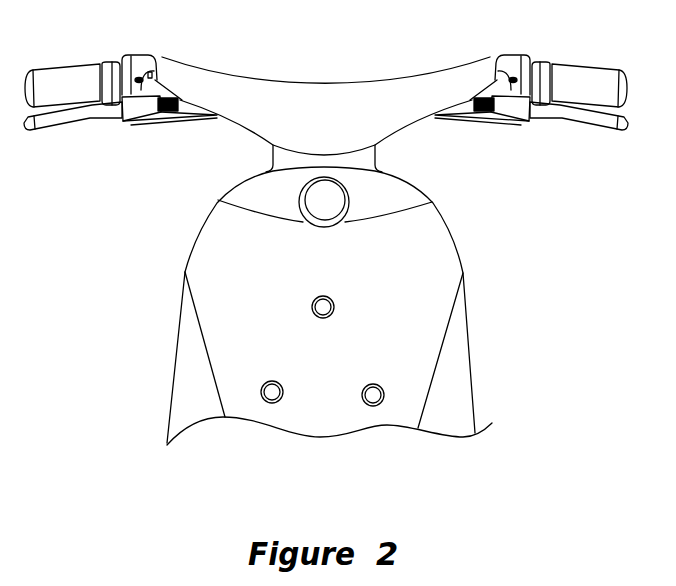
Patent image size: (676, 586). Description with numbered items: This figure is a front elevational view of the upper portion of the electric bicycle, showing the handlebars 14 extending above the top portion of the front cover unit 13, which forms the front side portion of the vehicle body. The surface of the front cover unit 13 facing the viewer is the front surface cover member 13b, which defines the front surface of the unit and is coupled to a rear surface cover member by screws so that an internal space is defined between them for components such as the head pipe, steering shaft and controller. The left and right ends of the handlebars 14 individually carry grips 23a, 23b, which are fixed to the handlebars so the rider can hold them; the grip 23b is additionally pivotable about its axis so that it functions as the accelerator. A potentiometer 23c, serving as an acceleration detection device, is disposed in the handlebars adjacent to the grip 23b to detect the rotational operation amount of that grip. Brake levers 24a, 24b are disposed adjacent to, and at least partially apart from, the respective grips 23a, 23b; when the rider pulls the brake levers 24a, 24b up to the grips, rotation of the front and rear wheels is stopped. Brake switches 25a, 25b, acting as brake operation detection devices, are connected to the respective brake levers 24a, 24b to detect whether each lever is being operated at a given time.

The front cover unit 13 is at (346, 306).
The front surface cover member 13b is at (460, 257).
The handlebars 14 is at (323, 93).
The grip 23a is at (590, 68).
The grip 23b is at (91, 66).
The potentiometer 23c is at (149, 72).
The brake lever 24a is at (584, 124).
The brake lever 24b is at (60, 124).
The brake switch 25a is at (514, 122).
The brake switch 25b is at (169, 98).